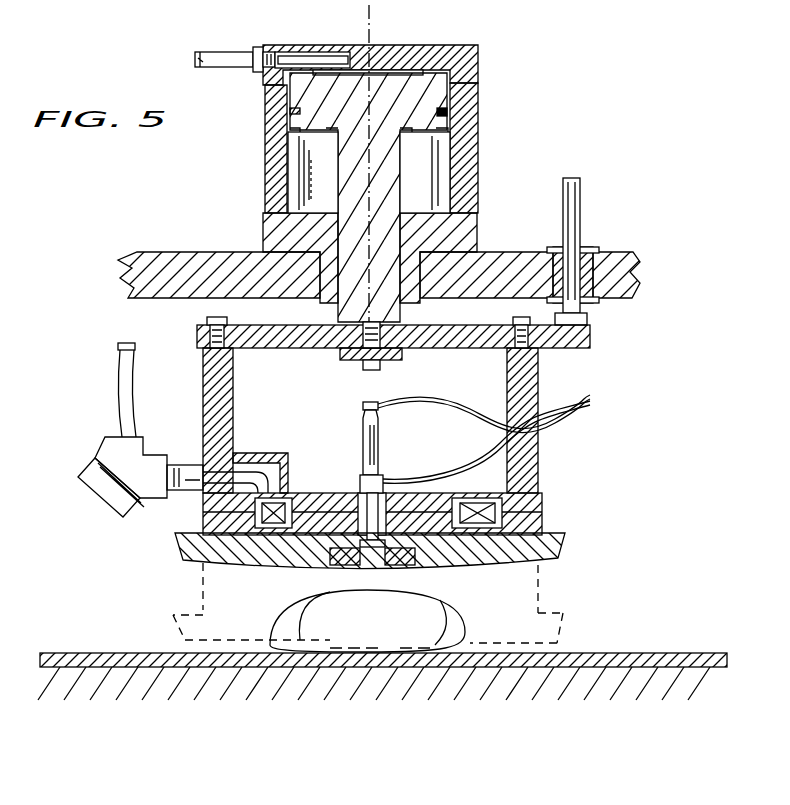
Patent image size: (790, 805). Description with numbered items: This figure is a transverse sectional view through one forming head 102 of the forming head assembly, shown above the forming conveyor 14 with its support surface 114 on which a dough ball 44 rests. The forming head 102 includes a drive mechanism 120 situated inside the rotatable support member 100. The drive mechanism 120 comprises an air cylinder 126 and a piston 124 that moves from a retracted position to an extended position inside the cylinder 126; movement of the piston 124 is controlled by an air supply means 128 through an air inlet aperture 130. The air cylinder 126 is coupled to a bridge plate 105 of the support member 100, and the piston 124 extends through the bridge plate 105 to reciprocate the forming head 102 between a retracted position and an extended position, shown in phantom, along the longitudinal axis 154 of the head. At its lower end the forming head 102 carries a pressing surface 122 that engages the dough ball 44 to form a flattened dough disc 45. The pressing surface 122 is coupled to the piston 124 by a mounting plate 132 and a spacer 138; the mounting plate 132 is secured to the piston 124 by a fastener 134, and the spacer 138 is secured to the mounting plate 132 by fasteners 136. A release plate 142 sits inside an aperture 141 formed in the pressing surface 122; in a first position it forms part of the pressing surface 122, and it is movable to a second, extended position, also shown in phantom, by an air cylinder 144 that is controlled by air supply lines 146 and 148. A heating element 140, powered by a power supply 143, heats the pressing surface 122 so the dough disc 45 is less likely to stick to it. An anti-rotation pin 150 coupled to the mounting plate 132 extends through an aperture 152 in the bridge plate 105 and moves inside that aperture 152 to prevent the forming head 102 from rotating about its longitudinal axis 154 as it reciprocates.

The forming conveyor 14 is at (688, 655).
The dough ball 44 is at (320, 627).
The flattened dough disc 45 is at (560, 640).
The rotatable support member 100 is at (607, 313).
The forming head 102 is at (648, 325).
The bridge plate 105 is at (197, 262).
The support surface 114 is at (327, 723).
The drive mechanism 120 is at (485, 108).
The pressing surface 122 is at (518, 560).
The piston 124 is at (393, 180).
The air cylinder 126 is at (310, 182).
The air supply means 128 is at (220, 63).
The air inlet aperture 130 is at (308, 58).
The mounting plate 132 is at (273, 345).
The fastener 134 is at (362, 368).
The fasteners 136 is at (205, 318).
The spacer 138 is at (202, 398).
The heating element 140 is at (471, 512).
The aperture 141 is at (333, 570).
The release plate 142 is at (407, 567).
The power supply 143 is at (107, 490).
The air cylinder 144 is at (365, 438).
The air supply line 146 is at (462, 418).
The air supply line 148 is at (410, 480).
The anti-rotation pin 150 is at (573, 198).
The aperture 152 is at (573, 260).
The longitudinal axis 154 is at (372, 41).